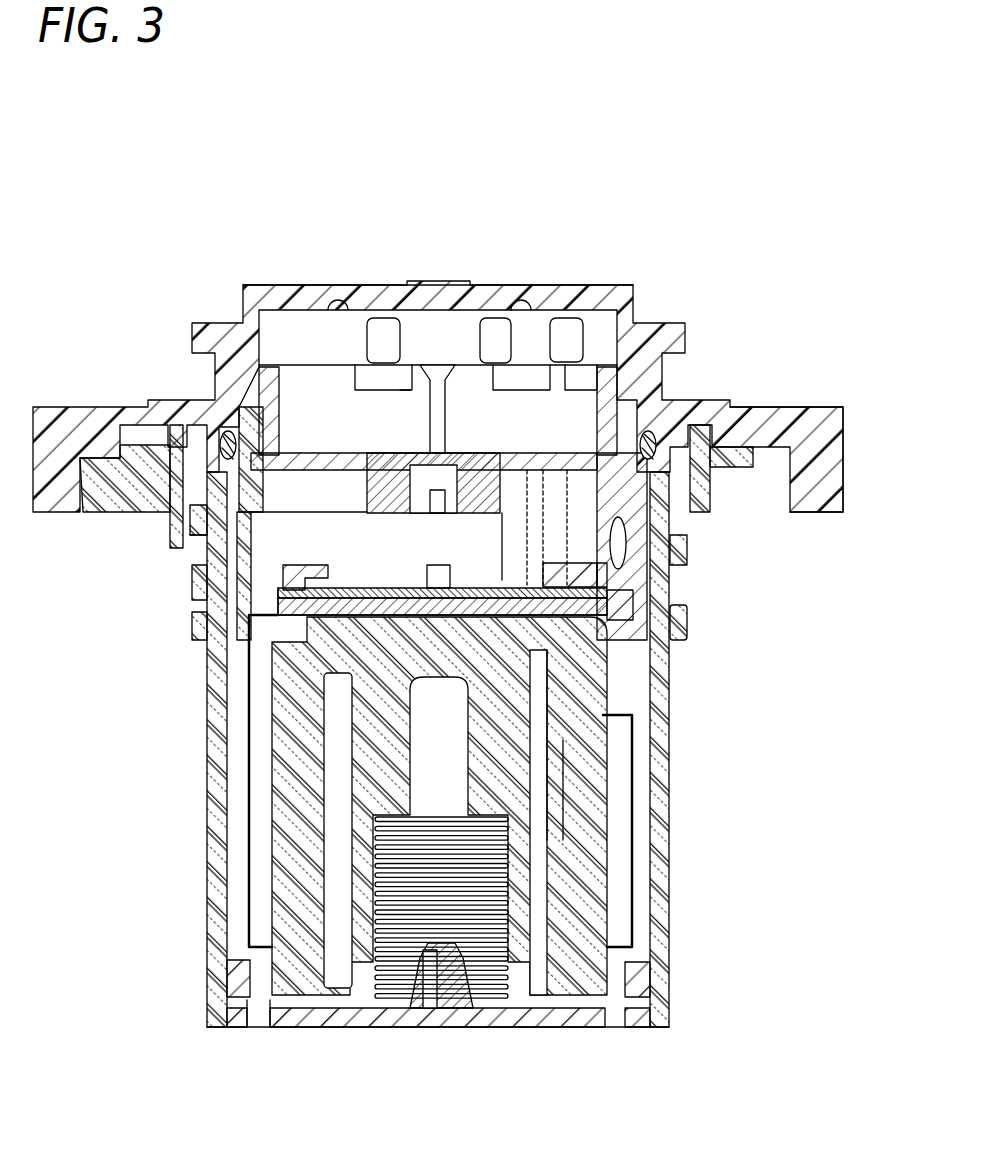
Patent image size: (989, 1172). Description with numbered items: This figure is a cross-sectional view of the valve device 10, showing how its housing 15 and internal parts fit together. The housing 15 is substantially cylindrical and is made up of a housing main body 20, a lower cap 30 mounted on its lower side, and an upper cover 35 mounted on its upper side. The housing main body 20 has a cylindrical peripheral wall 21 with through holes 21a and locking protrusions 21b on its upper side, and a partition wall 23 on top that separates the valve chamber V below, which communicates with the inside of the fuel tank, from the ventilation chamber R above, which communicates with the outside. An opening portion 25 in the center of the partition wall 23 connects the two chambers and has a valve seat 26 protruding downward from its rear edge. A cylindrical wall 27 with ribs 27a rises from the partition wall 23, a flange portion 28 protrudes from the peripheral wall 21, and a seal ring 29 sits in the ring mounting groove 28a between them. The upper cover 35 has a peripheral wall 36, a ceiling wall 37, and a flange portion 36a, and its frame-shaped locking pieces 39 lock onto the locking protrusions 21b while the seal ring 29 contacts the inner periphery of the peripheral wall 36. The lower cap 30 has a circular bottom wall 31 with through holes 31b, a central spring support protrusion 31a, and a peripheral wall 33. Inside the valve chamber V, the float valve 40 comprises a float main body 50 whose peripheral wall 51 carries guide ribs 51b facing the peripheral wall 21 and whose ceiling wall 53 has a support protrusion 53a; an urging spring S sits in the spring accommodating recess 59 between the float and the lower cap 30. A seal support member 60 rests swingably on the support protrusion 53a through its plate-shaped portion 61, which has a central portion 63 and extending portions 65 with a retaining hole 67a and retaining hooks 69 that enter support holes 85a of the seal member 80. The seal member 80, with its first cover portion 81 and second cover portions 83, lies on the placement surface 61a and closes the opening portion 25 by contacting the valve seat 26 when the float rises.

The valve device 10 is at (440, 643).
The housing 15 is at (420, 853).
The housing main body 20 is at (410, 766).
The peripheral wall 21 is at (410, 726).
The through holes 21a is at (687, 563).
The locking protrusions 21b is at (190, 598).
The partition wall 23 is at (590, 393).
The opening portion 25 is at (450, 455).
The valve seat 26 is at (707, 533).
The cylindrical wall 27 is at (455, 301).
The ribs 27a is at (568, 330).
The flange portion 28 is at (133, 470).
The ring mounting groove 28a is at (205, 495).
The seal ring 29 is at (230, 452).
The lower cap 30 is at (438, 1025).
The bottom wall 31 is at (428, 1025).
The spring support protrusion 31a is at (447, 1022).
The through holes 31b is at (265, 1030).
The peripheral wall 33 is at (657, 985).
The upper cover 35 is at (540, 282).
The peripheral wall 36 is at (440, 353).
The flange portion 36a is at (810, 415).
The ceiling wall 37 is at (378, 296).
The locking pieces 39 is at (190, 630).
The float valve 40 is at (443, 853).
The float main body 50 is at (637, 902).
The peripheral wall 51 is at (443, 806).
The guide ribs 51b is at (255, 838).
The ceiling wall 53 is at (600, 680).
The support protrusion 53a is at (595, 715).
The spring accommodating recess 59 is at (573, 954).
The seal support member 60 is at (504, 445).
The plate-shaped portion 61 is at (600, 623).
The placement surface 61a is at (355, 585).
The central portion 63 is at (410, 607).
The extending portions 65 is at (273, 600).
The retaining hole 67a is at (190, 575).
The retaining hook 69 is at (687, 598).
The seal member 80 is at (458, 640).
The first cover portion 81 is at (467, 590).
The second cover portions 83 is at (280, 593).
The support hole 85a is at (590, 653).
The ventilation chamber R is at (445, 362).
The valve chamber V is at (316, 553).
The urging spring S is at (515, 975).